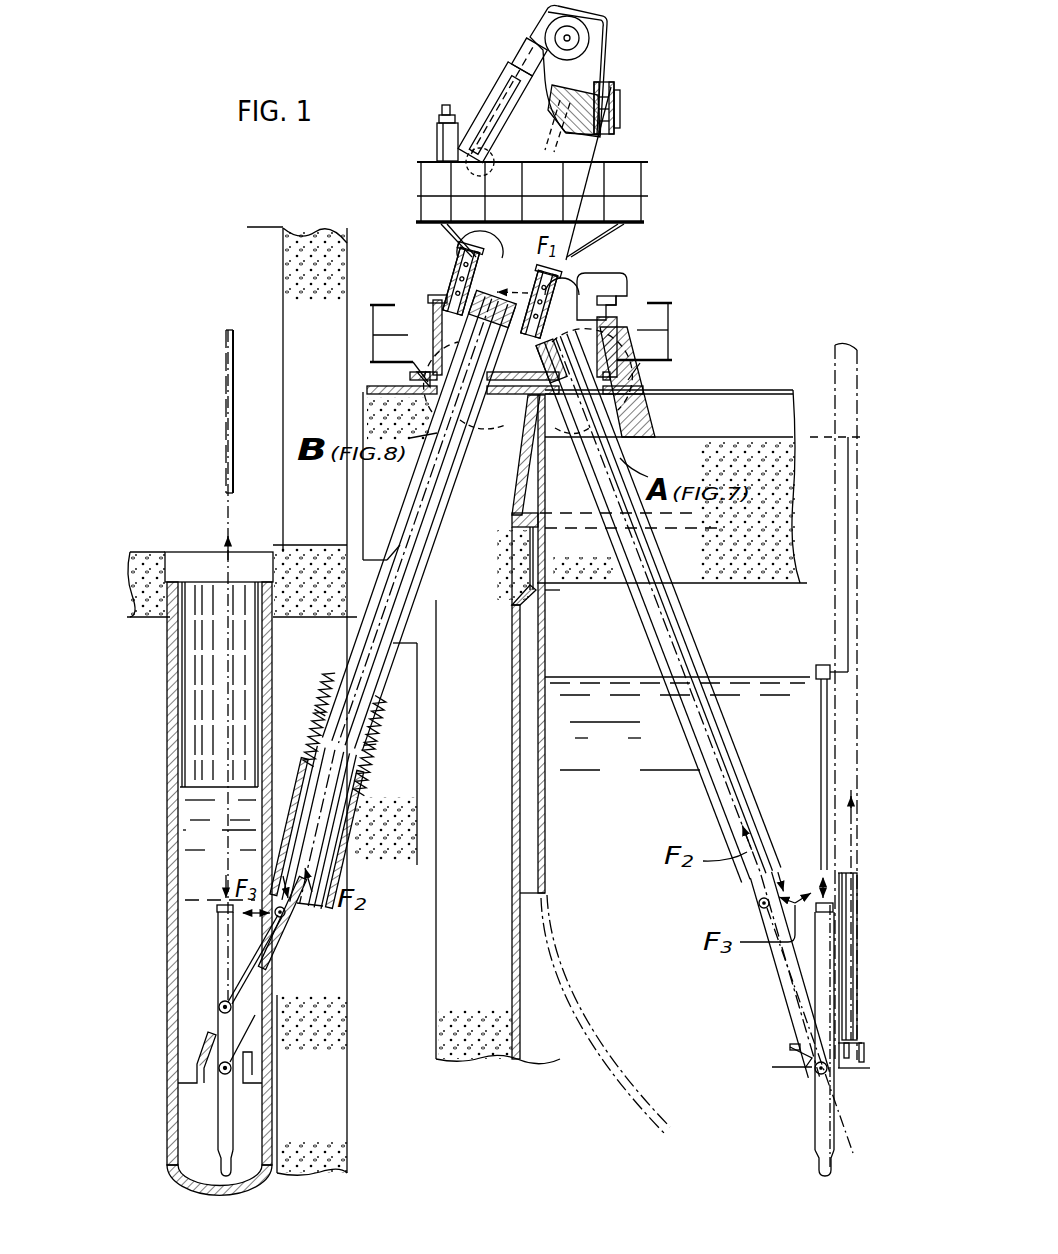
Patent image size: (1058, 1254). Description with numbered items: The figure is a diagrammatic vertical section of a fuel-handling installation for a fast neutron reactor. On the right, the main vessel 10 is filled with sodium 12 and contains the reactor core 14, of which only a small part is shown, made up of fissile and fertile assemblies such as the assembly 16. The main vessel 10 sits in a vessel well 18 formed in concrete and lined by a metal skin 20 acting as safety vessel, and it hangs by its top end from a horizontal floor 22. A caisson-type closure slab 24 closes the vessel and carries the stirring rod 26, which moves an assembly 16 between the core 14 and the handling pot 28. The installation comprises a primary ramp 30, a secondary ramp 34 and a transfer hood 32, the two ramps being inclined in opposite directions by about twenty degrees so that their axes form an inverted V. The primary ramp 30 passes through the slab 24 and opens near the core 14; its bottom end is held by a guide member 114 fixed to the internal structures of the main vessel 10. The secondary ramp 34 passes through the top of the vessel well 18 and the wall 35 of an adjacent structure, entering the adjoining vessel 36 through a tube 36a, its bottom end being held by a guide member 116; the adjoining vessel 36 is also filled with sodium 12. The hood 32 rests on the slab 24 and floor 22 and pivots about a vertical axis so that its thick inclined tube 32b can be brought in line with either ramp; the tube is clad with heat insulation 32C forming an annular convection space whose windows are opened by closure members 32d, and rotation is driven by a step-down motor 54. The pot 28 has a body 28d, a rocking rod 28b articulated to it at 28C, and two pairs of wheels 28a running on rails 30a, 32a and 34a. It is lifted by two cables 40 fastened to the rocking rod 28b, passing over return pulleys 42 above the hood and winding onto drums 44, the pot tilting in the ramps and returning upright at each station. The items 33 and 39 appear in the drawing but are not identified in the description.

The main vessel 10 is at (547, 816).
The sodium 12 is at (495, 788).
The reactor core 14 is at (842, 873).
The assembly 16 is at (840, 866).
The vessel well 18 is at (505, 997).
The metal skin 20 is at (540, 893).
The horizontal floor 22 is at (383, 388).
The closure slab 24 is at (777, 553).
The stirring rod 26 is at (848, 618).
The handling pot 28 is at (237, 1124).
The wheels 28a is at (295, 879).
The rocking rod 28b is at (268, 943).
The articulation 28C is at (233, 1008).
The pot body 28d is at (232, 1143).
The primary ramp 30 is at (697, 652).
The rails 30a is at (670, 633).
The transfer hood 32 is at (503, 55).
The rails 32a is at (604, 129).
The thick cylindrical tube 32b is at (586, 79).
The heat insulation 32C is at (450, 296).
The closure members 32d is at (622, 108).
The platform 33 is at (493, 221).
The secondary ramp 34 is at (391, 673).
The rails 34a is at (398, 607).
The wall 35 is at (406, 834).
The adjoining vessel 36 is at (172, 903).
The tube 36a is at (285, 915).
The ground wall 39 is at (266, 245).
The cables 40 is at (546, 62).
The return pulleys 42 is at (588, 34).
The drums 44 is at (468, 133).
The step-down motor 54 is at (633, 283).
The guide member 114 is at (787, 1050).
The guide member 116 is at (193, 1062).